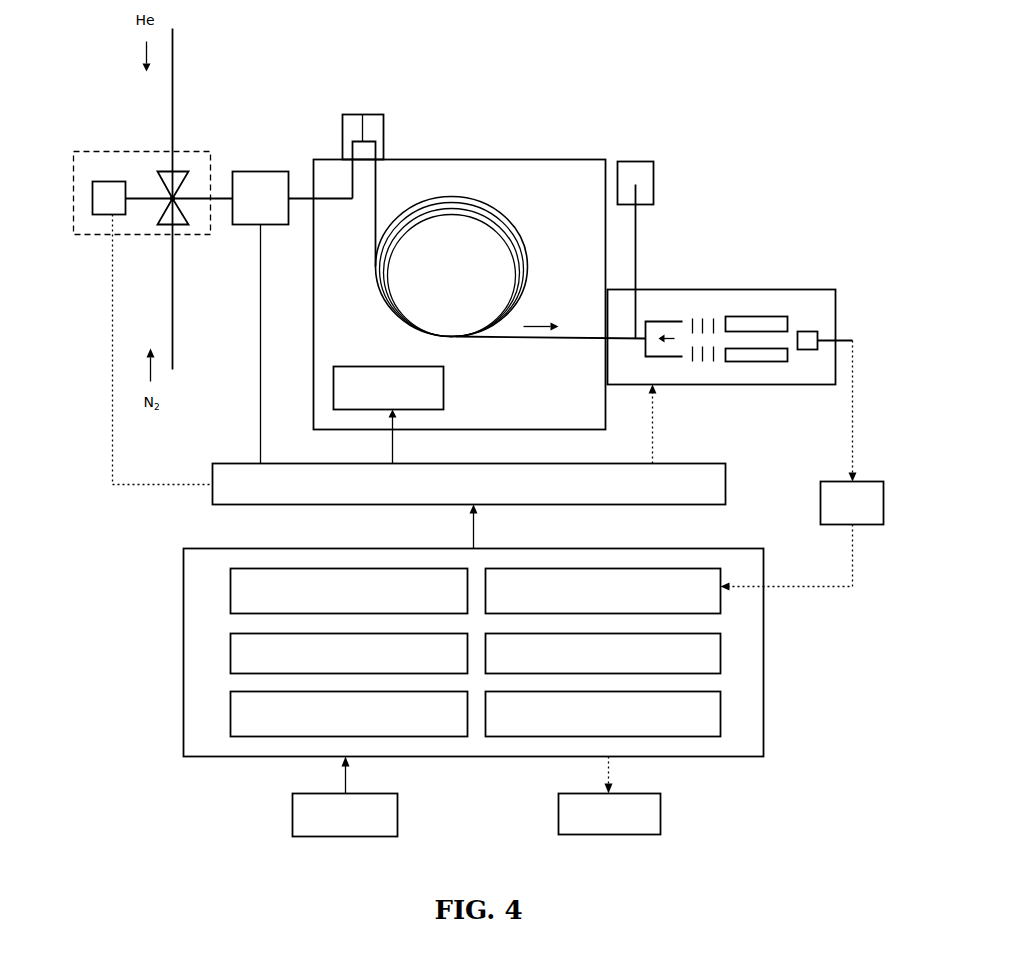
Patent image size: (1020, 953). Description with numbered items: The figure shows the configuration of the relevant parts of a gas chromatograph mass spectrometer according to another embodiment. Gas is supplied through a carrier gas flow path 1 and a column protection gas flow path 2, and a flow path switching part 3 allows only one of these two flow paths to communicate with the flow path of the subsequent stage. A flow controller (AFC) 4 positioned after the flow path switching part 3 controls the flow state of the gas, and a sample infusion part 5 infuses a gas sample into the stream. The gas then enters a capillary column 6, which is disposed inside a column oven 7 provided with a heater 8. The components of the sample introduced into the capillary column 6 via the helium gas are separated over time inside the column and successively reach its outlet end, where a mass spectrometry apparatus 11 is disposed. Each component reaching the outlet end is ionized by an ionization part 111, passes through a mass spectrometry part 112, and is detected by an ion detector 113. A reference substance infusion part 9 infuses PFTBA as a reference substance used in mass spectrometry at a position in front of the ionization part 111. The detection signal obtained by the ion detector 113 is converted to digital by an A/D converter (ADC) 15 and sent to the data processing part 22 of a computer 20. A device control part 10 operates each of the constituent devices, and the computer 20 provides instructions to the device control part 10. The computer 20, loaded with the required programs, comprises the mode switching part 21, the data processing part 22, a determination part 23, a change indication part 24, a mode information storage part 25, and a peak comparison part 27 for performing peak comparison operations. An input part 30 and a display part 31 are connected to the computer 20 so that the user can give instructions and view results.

The carrier gas flow path 1 is at (174, 100).
The column protection gas flow path 2 is at (174, 330).
The flow path switching part 3 is at (101, 147).
The flow controller (AFC) 4 is at (258, 168).
The sample infusion part 5 is at (348, 113).
The capillary column 6 is at (503, 217).
The column oven 7 is at (505, 157).
The heater 8 is at (363, 365).
The reference substance infusion part 9 is at (633, 160).
The device control part 10 is at (233, 462).
The mass spectrometry apparatus 11 is at (746, 242).
The ionization part 111 is at (669, 319).
The mass spectrometry part 112 is at (769, 314).
The ion detector 113 is at (819, 331).
The A/D converter (ADC) 15 is at (870, 480).
The computer 20 is at (183, 623).
The mode switching part 21 is at (229, 584).
The data processing part 22 is at (722, 585).
The determination part 23 is at (229, 648).
The change indication part 24 is at (722, 652).
The mode information storage part 25 is at (229, 705).
The peak comparison part 27 is at (722, 706).
The input part 30 is at (292, 816).
The display part 31 is at (558, 816).